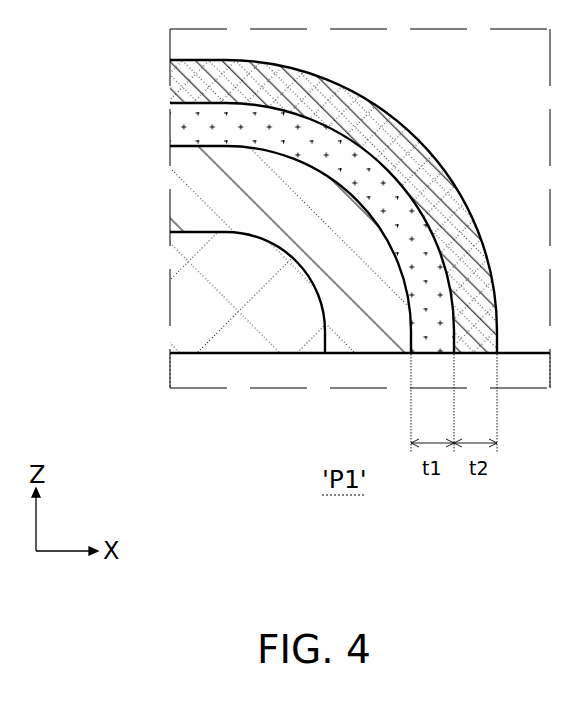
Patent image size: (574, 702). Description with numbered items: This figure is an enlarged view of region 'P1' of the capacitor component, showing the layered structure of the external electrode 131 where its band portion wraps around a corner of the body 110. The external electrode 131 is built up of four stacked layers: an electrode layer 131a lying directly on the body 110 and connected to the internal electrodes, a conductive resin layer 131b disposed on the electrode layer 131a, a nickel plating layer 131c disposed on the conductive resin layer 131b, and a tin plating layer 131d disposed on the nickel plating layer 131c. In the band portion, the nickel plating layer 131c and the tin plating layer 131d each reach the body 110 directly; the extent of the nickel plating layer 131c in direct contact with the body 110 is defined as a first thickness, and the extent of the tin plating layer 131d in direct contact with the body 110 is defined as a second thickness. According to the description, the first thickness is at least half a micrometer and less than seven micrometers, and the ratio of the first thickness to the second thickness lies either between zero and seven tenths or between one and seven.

The external electrode 131 is at (255, 206).
The electrode layer 131a is at (170, 268).
The conductive resin layer 131b is at (170, 189).
The nickel (Ni) plating layer 131c is at (170, 125).
The tin (Sn) plating layer 131d is at (66, 276).
The body 110 is at (170, 378).